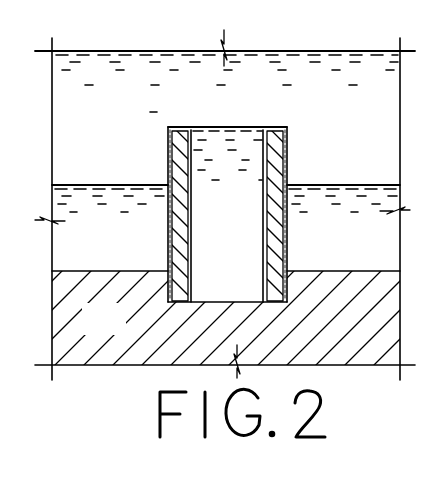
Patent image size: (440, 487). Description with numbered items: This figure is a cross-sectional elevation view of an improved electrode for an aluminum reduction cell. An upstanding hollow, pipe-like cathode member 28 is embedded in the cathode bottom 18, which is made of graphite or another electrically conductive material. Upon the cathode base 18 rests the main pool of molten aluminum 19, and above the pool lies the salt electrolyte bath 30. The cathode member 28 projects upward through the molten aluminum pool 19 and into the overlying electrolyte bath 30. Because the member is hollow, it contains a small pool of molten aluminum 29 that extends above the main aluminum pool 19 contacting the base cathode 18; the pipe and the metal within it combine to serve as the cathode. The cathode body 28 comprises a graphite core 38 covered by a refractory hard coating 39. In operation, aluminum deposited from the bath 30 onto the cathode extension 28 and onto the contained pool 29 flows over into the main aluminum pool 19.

The cathode base 18 is at (119, 331).
The molten aluminum pool 19 is at (116, 240).
The cathode member 28 is at (163, 133).
The small pool of molten aluminum 29 is at (247, 141).
The electrolyte bath 30 is at (116, 174).
The graphite core 38 is at (275, 173).
The refractory hard coating 39 is at (285, 146).